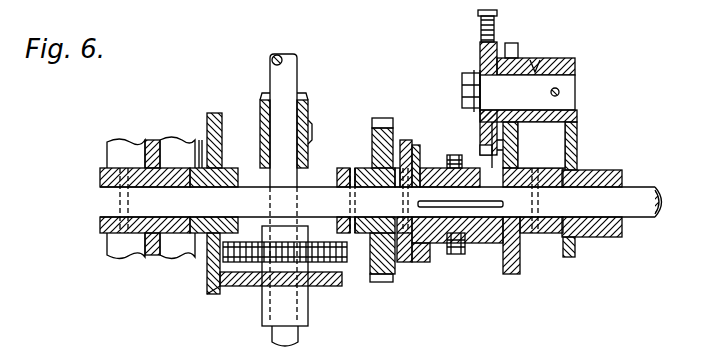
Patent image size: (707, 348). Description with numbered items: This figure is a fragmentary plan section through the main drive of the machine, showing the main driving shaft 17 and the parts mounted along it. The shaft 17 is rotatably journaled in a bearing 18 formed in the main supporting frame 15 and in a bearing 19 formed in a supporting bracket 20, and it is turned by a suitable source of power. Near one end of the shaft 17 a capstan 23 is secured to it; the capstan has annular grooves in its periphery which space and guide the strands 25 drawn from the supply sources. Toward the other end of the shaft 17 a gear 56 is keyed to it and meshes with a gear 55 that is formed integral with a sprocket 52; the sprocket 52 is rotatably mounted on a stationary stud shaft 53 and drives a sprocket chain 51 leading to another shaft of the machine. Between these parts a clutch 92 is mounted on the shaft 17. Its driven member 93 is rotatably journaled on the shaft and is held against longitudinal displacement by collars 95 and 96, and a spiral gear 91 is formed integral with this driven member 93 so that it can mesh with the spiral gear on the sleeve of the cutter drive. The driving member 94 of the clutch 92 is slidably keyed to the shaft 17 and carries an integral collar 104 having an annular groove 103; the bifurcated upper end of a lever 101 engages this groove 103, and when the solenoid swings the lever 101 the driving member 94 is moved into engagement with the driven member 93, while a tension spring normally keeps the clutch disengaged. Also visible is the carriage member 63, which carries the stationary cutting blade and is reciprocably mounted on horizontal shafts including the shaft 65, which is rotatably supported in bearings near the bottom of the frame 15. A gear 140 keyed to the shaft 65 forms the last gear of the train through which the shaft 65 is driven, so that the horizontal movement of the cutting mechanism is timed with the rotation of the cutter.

The main supporting frame 15 is at (255, 288).
The main driving shaft 17 is at (322, 212).
The bearing 18 is at (203, 140).
The bearing 19 is at (622, 238).
The supporting bracket 20 is at (596, 159).
The capstan 23 is at (113, 152).
The strands 25 is at (154, 338).
The sprocket chain 51 is at (498, 24).
The sprocket 52 is at (480, 50).
The stationary stud shaft 53 is at (540, 86).
The gear 55 is at (514, 57).
The gear 56 is at (524, 270).
The carriage member 63 is at (306, 95).
The shaft 65 is at (283, 64).
The spiral gear 91 is at (382, 128).
The clutch 92 is at (417, 268).
The driven clutch member 93 is at (414, 268).
The driving clutch member 94 is at (415, 266).
The collar 95 is at (340, 168).
The collar 96 is at (406, 160).
The lever 101 is at (466, 128).
The annular groove 103 is at (458, 240).
The collar 104 is at (485, 236).
The gear 140 is at (350, 258).